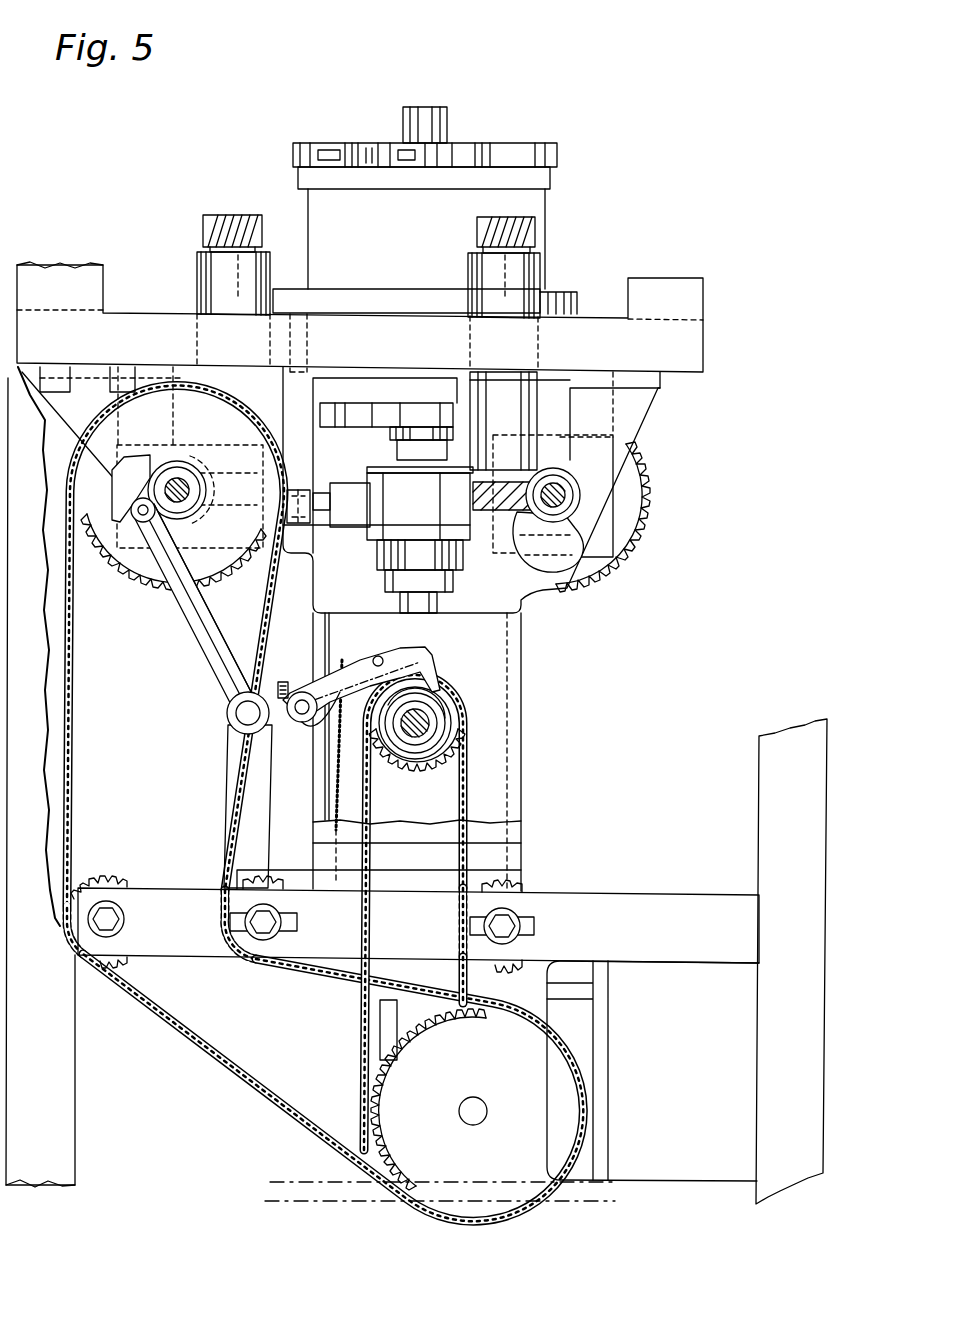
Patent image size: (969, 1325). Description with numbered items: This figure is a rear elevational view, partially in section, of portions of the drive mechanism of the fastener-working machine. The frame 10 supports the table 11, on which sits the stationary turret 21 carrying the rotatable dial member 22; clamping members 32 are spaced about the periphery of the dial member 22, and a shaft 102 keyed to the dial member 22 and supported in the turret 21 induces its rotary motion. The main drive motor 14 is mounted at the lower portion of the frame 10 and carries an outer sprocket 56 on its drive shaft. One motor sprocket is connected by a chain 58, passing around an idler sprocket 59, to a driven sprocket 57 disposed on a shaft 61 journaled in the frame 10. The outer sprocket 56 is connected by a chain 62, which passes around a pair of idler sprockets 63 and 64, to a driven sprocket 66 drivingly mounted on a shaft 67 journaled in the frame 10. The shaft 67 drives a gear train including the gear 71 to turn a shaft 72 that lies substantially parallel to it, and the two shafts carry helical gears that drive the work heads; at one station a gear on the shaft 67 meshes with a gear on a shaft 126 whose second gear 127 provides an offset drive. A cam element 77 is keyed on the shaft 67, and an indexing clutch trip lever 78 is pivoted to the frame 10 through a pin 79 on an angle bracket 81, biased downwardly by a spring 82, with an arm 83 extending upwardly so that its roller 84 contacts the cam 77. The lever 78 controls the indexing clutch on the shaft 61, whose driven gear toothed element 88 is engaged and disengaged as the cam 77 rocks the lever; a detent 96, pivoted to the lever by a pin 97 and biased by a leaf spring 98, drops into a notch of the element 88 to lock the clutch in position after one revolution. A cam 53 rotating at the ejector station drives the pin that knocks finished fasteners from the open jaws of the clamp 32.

The frame 10 is at (606, 889).
The table 11 is at (596, 316).
The main drive motor 14 is at (440, 985).
The stationary turret 21 is at (548, 206).
The dial member 22 is at (560, 156).
The clamping member 32 is at (322, 145).
The cam 53 is at (545, 568).
The outer sprocket 56 is at (358, 1102).
The driven sprocket 57 is at (418, 778).
The chain 58 is at (468, 795).
The idler sprocket 59 is at (510, 890).
The shaft 61 is at (450, 700).
The chain 62 is at (75, 748).
The idler sprocket 63 is at (108, 880).
The idler sprocket 64 is at (258, 878).
The driven sprocket 66 is at (135, 598).
The shaft 67 is at (186, 480).
The gear 71 is at (632, 543).
The shaft 72 is at (562, 488).
The cam element 77 is at (150, 462).
The indexing clutch trip lever 78 is at (185, 669).
The pin 79 is at (228, 714).
The angle bracket 81 is at (226, 786).
The spring 82 is at (322, 738).
The arm 83 is at (190, 630).
The roller 84 is at (133, 520).
The driven gear toothed element 88 is at (428, 702).
The detent 96 is at (395, 662).
The pin 97 is at (298, 694).
The leaf spring 98 is at (343, 658).
The shaft 102 is at (448, 126).
The shaft 126 is at (258, 252).
The second gear 127 is at (204, 231).